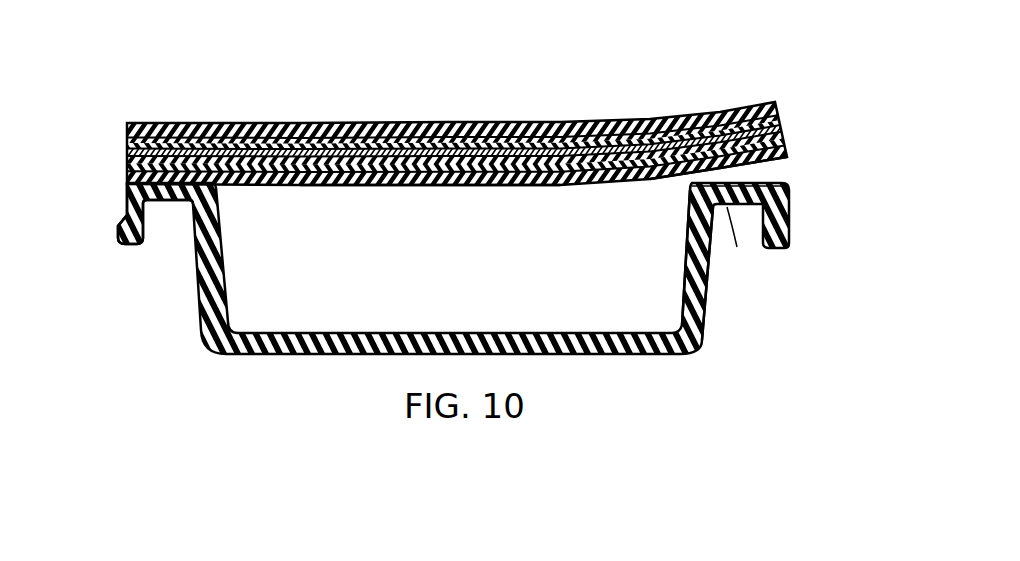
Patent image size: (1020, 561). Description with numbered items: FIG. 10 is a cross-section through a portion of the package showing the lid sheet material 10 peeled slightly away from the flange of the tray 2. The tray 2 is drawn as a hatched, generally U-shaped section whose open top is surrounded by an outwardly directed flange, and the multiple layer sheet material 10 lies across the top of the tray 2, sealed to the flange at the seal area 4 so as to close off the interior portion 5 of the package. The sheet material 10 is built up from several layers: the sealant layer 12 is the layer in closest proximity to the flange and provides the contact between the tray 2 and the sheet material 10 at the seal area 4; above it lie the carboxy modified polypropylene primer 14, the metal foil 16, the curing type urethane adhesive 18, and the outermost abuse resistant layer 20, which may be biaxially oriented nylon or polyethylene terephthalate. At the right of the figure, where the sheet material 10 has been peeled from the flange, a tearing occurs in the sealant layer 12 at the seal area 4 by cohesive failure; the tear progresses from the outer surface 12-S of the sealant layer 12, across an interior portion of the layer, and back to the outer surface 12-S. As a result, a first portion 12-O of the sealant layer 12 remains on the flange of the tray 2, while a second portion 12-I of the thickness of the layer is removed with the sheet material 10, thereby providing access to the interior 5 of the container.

The tray 2 is at (697, 325).
The seal area 4 is at (160, 192).
The interior portion 5 is at (660, 290).
The multiple layer sheet material 10 is at (480, 146).
The sealant layer 12 is at (788, 154).
The outer surface of layer 12 12-S is at (490, 187).
The second portion of layer 12 12-I is at (748, 168).
The first portion of layer 12 12-O is at (748, 179).
The carboxy modified polypropylene primer 14 is at (785, 138).
The metal foil 16 is at (793, 123).
The curing type urethane adhesive 18 is at (793, 113).
The abuse resistant layer 20 is at (785, 103).